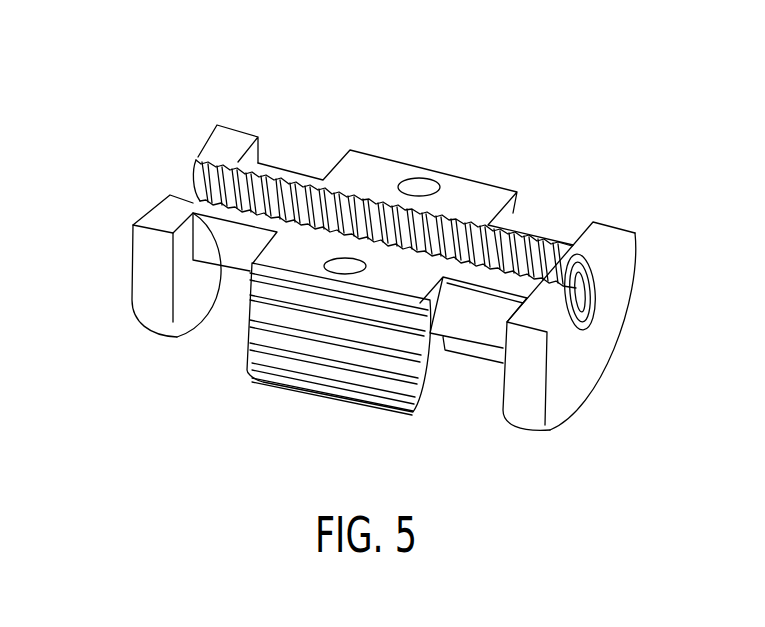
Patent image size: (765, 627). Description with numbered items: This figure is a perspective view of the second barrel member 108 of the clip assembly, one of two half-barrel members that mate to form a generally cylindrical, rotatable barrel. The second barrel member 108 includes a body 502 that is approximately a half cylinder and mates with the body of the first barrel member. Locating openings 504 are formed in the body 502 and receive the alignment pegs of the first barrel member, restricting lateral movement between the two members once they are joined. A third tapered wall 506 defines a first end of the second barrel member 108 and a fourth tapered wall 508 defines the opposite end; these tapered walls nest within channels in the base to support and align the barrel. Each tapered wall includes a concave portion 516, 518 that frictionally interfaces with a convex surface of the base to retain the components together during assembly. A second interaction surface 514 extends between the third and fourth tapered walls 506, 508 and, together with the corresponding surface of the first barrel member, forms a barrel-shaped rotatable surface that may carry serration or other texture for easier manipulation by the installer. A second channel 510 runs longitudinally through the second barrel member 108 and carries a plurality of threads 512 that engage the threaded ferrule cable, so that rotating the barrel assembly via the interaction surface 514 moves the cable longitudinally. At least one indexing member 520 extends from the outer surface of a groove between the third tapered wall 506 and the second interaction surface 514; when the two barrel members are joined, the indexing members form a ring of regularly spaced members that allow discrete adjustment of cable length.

The second barrel member 108 is at (528, 93).
The body 502 is at (230, 135).
The locating openings 504 is at (345, 258).
The third tapered wall 506 is at (562, 412).
The fourth tapered wall 508 is at (152, 217).
The second channel 510 is at (570, 275).
The threads 512 is at (193, 175).
The second interaction surface 514 is at (295, 358).
The concave portion 516 is at (588, 368).
The concave portion 518 is at (125, 280).
The indexing member 520 is at (478, 332).